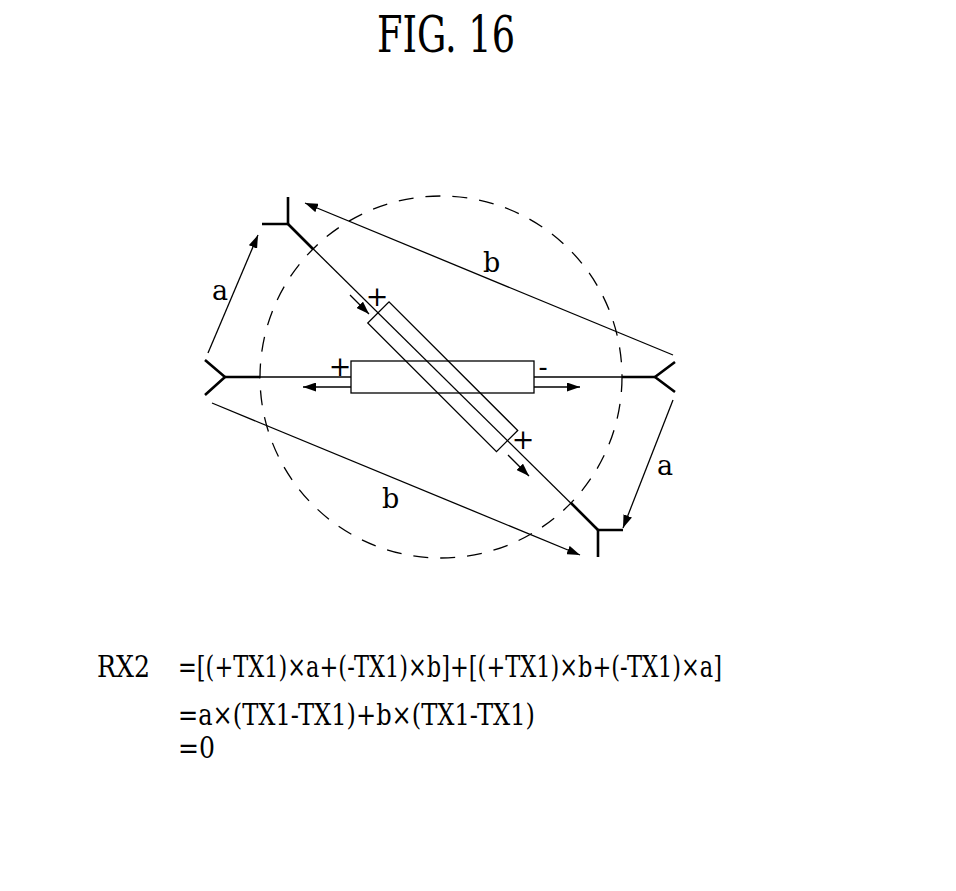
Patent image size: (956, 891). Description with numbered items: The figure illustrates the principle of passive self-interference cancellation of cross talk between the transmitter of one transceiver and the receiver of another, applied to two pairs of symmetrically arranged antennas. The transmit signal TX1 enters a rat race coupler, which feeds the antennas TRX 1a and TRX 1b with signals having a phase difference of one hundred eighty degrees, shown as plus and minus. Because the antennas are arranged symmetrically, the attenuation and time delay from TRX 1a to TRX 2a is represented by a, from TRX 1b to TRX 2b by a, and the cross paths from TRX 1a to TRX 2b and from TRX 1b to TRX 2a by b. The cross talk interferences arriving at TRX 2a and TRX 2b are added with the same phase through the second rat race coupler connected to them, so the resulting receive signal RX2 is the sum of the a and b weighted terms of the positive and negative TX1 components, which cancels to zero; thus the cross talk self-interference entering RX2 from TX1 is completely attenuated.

The TX1 signal TX1 is at (396, 393).
The RX2 signal RX2 is at (427, 335).
The antenna TRX 1a is at (176, 391).
The antenna TRX 1b is at (713, 360).
The antenna TRX 2a is at (240, 206).
The antenna TRX 2b is at (649, 552).